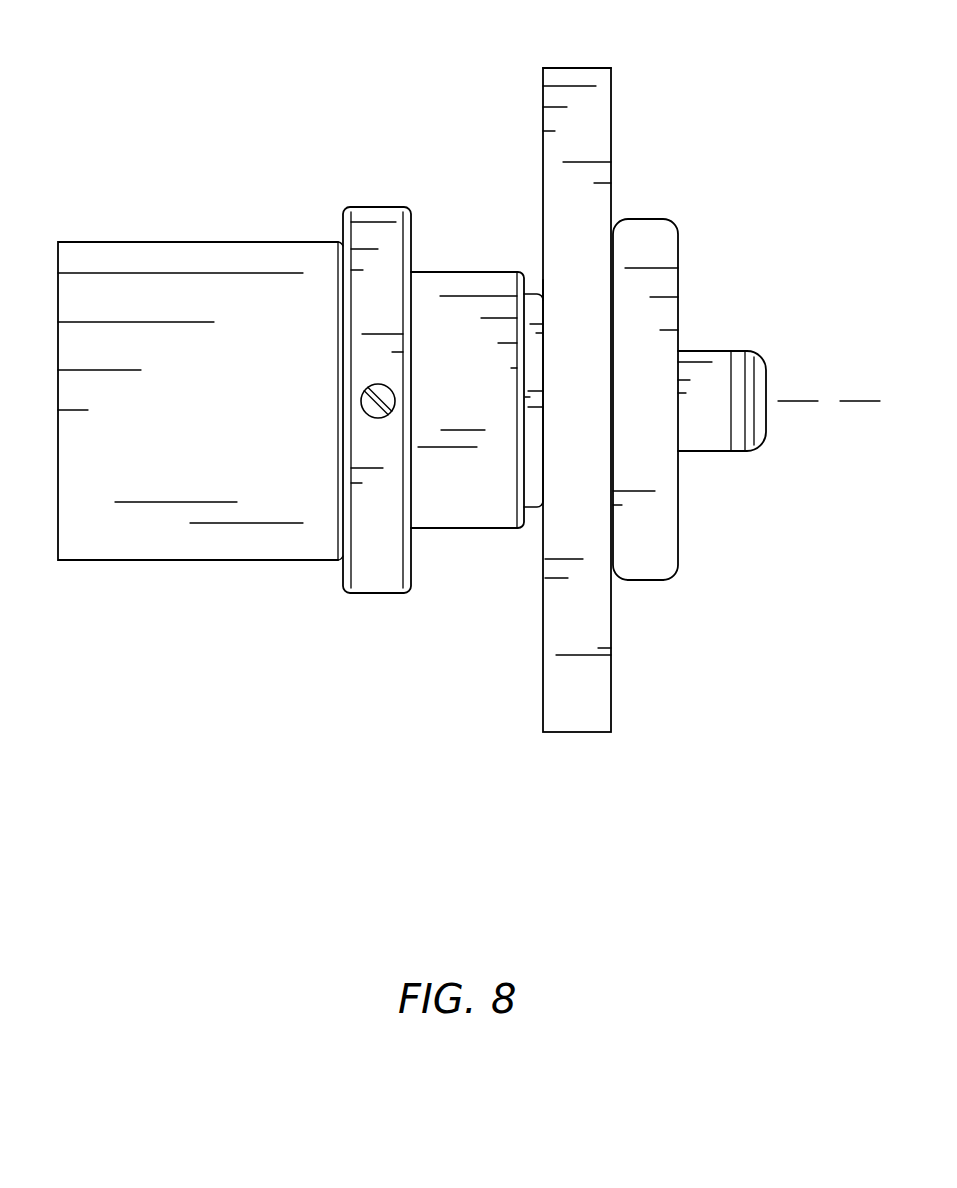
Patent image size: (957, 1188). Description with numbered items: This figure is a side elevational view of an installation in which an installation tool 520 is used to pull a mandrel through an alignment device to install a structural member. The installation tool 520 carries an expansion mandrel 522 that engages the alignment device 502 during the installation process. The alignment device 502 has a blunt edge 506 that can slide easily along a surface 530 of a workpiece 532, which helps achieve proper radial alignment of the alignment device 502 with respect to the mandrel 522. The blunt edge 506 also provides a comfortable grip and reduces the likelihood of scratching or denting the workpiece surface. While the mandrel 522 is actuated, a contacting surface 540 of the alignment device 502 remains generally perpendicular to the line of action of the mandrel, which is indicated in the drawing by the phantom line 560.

The installation tool 520 is at (145, 168).
The surface 530 is at (611, 693).
The workpiece 532 is at (578, 68).
The contacting surface 540 is at (610, 293).
The alignment device 502 is at (643, 219).
The blunt edge 506 is at (629, 582).
The expansion mandrel 522 is at (718, 350).
The phantom line 560 is at (828, 401).